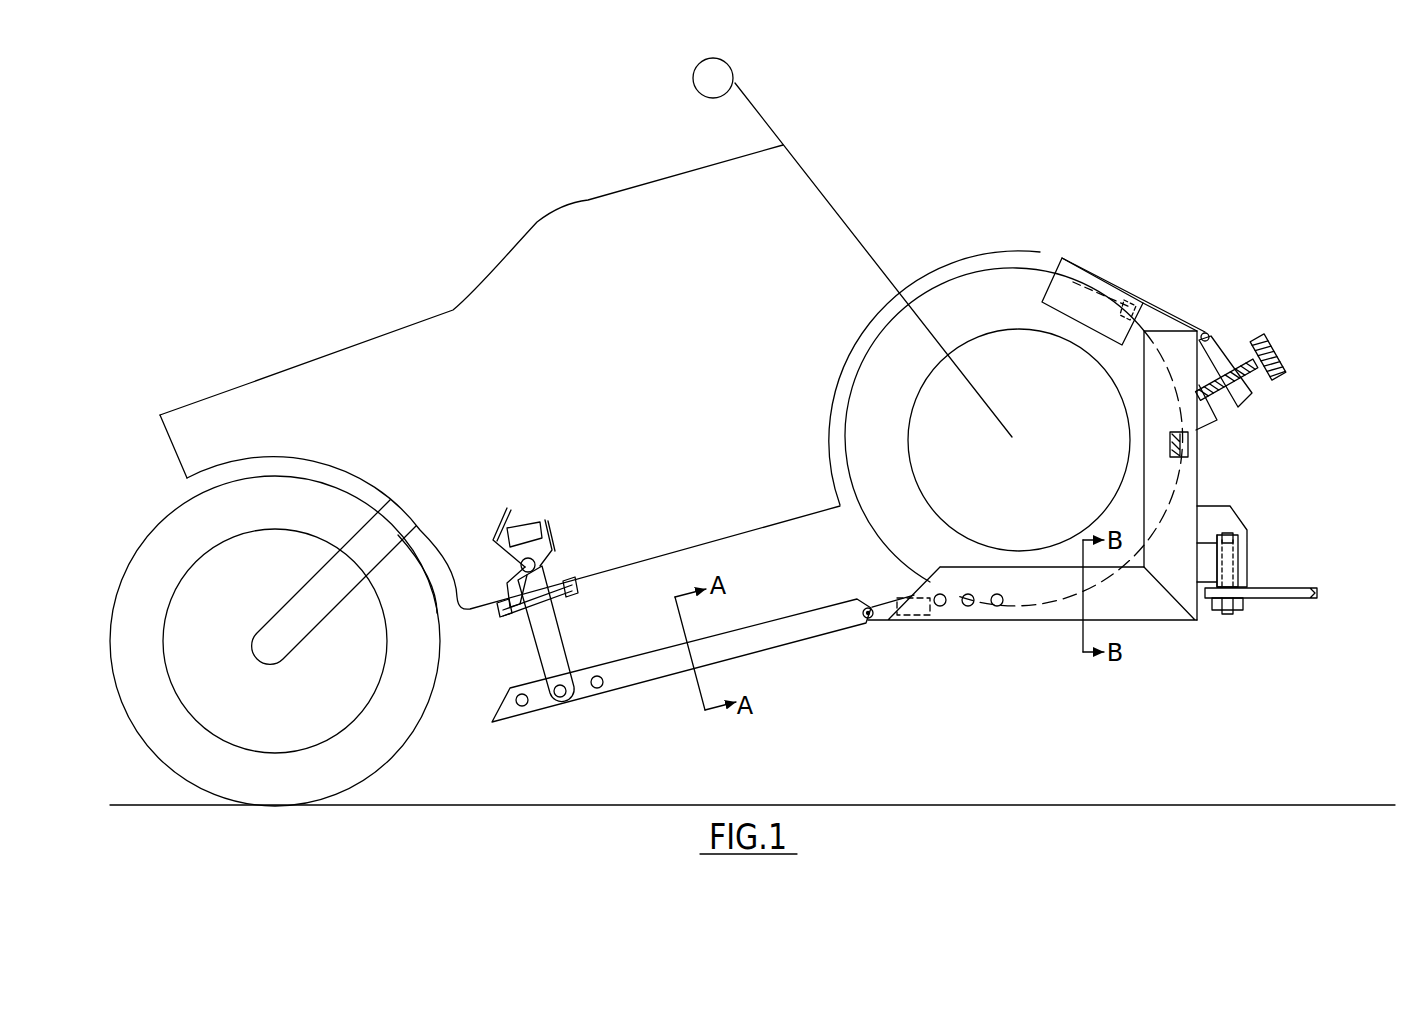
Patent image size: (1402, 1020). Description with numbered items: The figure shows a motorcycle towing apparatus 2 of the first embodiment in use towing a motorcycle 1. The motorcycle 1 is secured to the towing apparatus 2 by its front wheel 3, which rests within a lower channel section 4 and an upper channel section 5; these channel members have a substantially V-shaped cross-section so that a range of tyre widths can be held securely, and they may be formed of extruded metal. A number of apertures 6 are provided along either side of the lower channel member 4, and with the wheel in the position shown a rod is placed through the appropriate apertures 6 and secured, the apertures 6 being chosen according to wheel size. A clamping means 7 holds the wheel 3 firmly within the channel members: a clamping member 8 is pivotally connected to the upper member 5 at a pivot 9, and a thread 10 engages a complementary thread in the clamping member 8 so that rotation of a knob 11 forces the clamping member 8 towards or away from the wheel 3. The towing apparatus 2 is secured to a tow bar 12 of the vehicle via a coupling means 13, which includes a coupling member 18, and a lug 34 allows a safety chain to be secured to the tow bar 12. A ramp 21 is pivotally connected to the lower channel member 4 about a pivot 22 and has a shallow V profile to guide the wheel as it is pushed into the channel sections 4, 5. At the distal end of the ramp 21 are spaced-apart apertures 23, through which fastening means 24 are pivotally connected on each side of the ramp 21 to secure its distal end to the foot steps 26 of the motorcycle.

The motorcycle 1 is at (812, 159).
The motorcycle towing apparatus 2 is at (1099, 475).
The front wheel 3 is at (995, 292).
The lower channel section 4 is at (1130, 605).
The upper channel section 5 is at (1190, 476).
The apertures 6 is at (995, 606).
The clamping means 7 is at (1181, 331).
The clamping member 8 is at (1097, 287).
The pivot 9 is at (1208, 332).
The thread 10 is at (1250, 374).
The knob 11 is at (1256, 333).
The tow bar 12 is at (1275, 597).
The coupling means 13 is at (1262, 529).
The coupling member 18 is at (1216, 519).
The ramp 21 is at (711, 674).
The pivot 22 is at (870, 622).
The spaced-apart apertures 23 is at (594, 688).
The fastening means 24 is at (518, 578).
The foot steps 26 is at (527, 530).
The lug 34 is at (1190, 445).